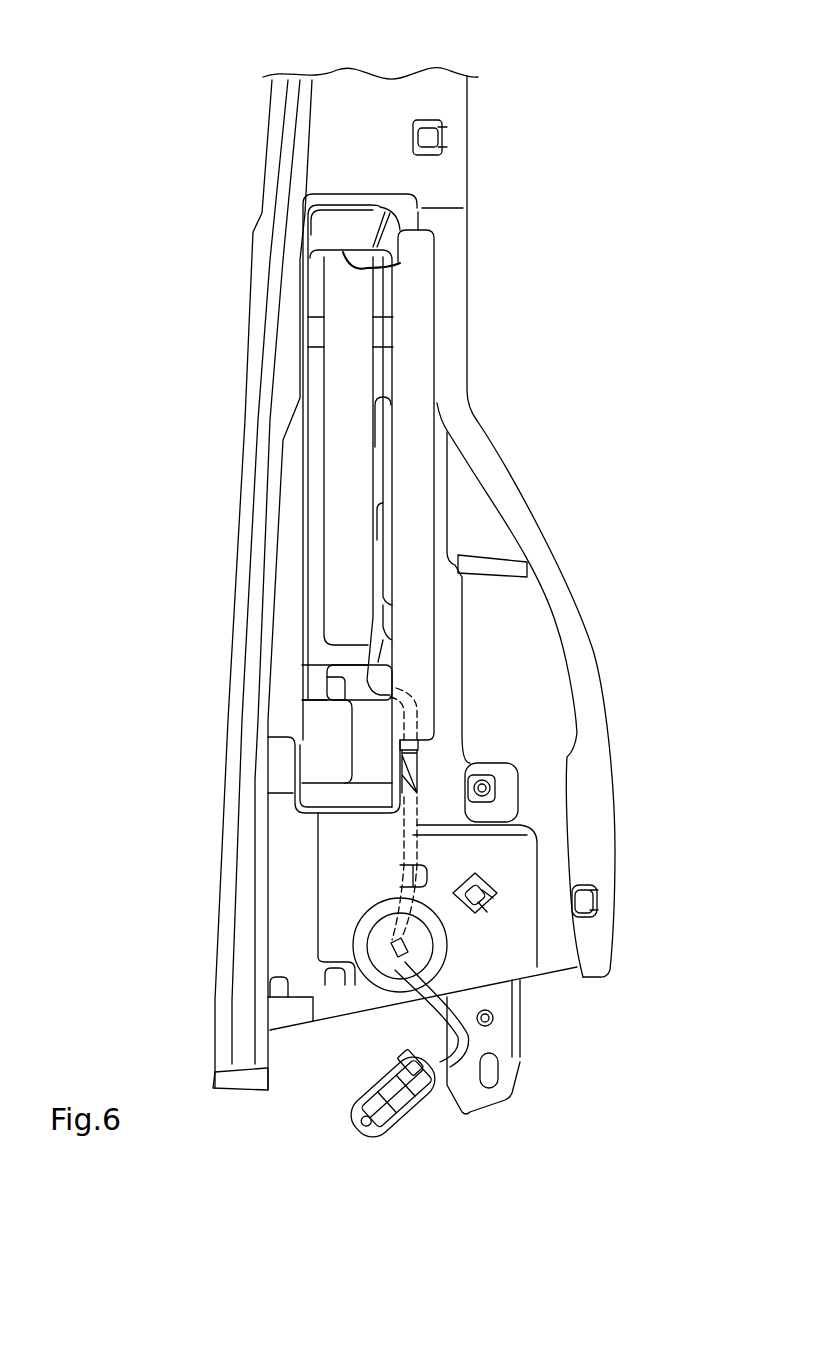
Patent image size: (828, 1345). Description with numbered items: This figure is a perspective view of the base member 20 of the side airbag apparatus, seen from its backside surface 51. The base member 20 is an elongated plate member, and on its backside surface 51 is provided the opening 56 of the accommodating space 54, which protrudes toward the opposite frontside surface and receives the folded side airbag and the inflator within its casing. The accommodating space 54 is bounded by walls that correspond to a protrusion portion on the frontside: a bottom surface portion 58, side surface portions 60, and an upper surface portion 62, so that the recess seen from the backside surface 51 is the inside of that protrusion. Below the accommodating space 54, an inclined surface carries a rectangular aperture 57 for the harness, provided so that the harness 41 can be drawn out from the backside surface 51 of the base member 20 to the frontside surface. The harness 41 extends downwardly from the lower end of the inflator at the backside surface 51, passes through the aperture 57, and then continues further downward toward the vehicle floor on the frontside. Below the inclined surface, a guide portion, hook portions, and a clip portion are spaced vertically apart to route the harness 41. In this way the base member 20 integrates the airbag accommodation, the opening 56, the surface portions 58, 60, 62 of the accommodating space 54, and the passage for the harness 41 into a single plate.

The base member 20 is at (355, 1068).
The harness 41 is at (472, 1037).
The backside surface 51 is at (363, 110).
The accommodating space 54 is at (432, 459).
The opening 56 is at (373, 308).
The aperture for the harness 57 is at (327, 681).
The bottom surface portion 58 is at (360, 495).
The side surface portions 60 is at (308, 470).
The upper surface portion 62 is at (400, 263).